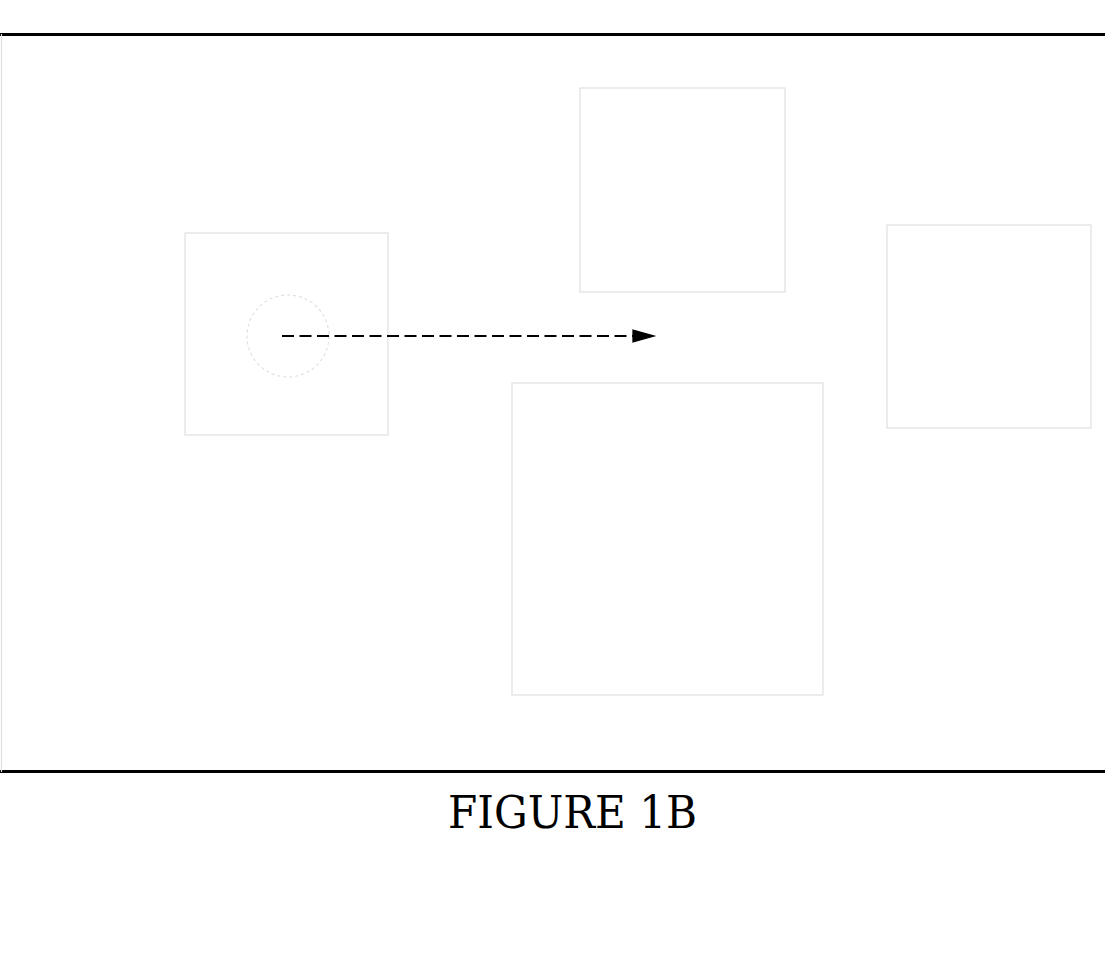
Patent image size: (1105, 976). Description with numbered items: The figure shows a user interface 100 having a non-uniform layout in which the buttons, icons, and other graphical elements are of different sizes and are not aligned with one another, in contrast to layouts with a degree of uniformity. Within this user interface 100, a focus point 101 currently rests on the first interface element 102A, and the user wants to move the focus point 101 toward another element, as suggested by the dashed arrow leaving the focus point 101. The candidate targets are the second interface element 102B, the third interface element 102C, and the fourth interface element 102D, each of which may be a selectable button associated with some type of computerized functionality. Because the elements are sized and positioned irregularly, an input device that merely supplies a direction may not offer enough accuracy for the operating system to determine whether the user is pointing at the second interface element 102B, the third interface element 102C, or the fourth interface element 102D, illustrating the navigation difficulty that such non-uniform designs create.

The display screen 100 is at (100, 772).
The focus point 101 is at (255, 323).
The first interface element 102A is at (302, 235).
The second interface element 102B is at (580, 233).
The third interface element 102C is at (1029, 227).
The fourth interface element 102D is at (515, 658).